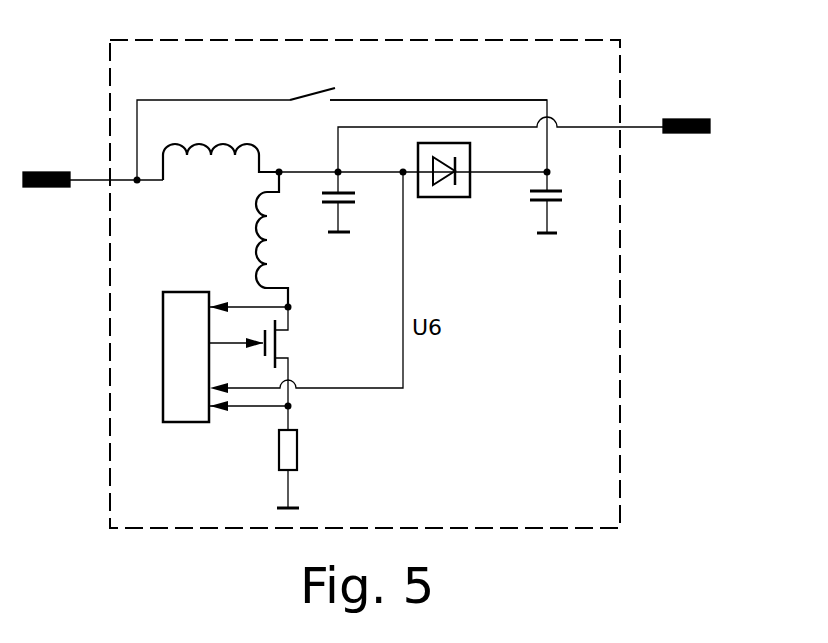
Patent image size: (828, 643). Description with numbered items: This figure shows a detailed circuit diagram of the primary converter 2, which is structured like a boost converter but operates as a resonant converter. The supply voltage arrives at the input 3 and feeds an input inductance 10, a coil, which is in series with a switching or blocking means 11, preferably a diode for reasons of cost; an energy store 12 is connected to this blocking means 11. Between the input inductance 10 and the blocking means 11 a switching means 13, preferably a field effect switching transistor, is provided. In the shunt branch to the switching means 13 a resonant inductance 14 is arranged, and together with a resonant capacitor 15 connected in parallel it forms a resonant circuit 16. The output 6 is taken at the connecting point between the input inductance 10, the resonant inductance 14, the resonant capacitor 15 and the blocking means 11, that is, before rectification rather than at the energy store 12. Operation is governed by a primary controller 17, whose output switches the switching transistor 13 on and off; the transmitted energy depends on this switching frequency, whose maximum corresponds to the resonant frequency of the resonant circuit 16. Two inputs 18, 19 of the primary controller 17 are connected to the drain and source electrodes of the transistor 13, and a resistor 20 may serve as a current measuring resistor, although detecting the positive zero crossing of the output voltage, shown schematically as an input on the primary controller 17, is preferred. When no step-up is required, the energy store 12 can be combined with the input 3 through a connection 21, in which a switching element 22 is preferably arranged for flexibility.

The primary converter 2 is at (621, 473).
The input 3 is at (45, 187).
The output 6 is at (687, 118).
The input inductance 10 is at (225, 158).
The switching or blocking means 11 is at (443, 200).
The energy store 12 is at (553, 205).
The switching means 13 is at (280, 340).
The resonant inductance 14 is at (257, 253).
The resonant capacitor 15 is at (347, 203).
The resonant circuit 16 is at (312, 229).
The primary controller 17 is at (198, 365).
The input of the primary controller 18 is at (245, 305).
The input of the primary controller 19 is at (262, 407).
The resistor 20 is at (298, 450).
The connection 21 is at (468, 100).
The switching element 22 is at (312, 94).